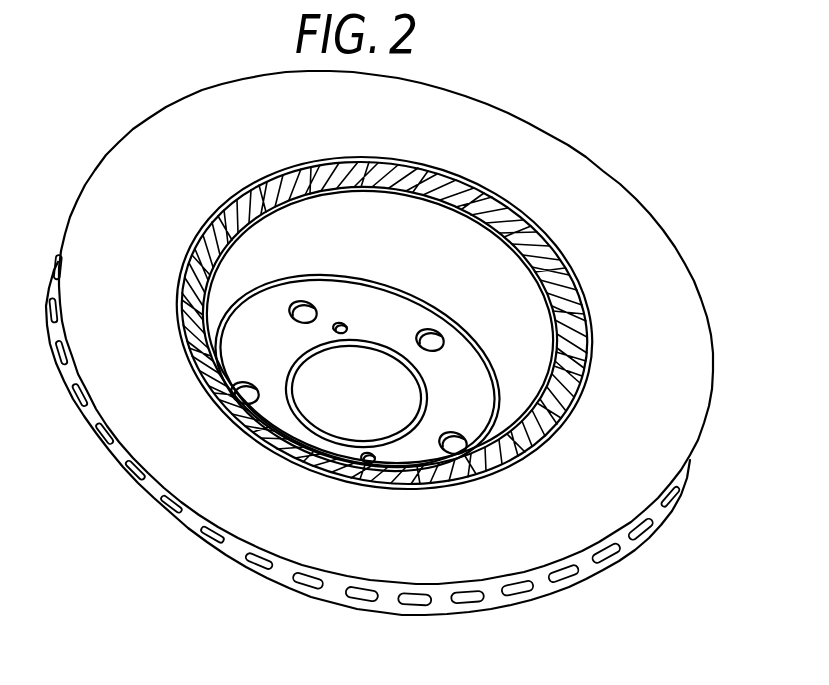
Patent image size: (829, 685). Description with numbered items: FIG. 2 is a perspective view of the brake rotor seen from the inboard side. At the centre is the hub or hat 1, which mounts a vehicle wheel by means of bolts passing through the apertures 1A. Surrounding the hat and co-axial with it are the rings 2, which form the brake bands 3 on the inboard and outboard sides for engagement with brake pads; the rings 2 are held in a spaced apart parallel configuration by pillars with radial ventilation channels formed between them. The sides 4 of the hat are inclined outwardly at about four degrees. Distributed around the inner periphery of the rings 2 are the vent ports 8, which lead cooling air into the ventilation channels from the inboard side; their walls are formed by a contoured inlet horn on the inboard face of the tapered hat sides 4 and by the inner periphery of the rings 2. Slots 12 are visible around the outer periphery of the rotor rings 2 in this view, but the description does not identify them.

The hub or hat 1 is at (452, 365).
The apertures 1A is at (458, 430).
The rings 2 is at (323, 588).
The brake bands 3 is at (273, 517).
The sides of the hat 4 is at (413, 243).
The vent ports 8 is at (217, 388).
The peripheral vent slots 12 is at (563, 573).